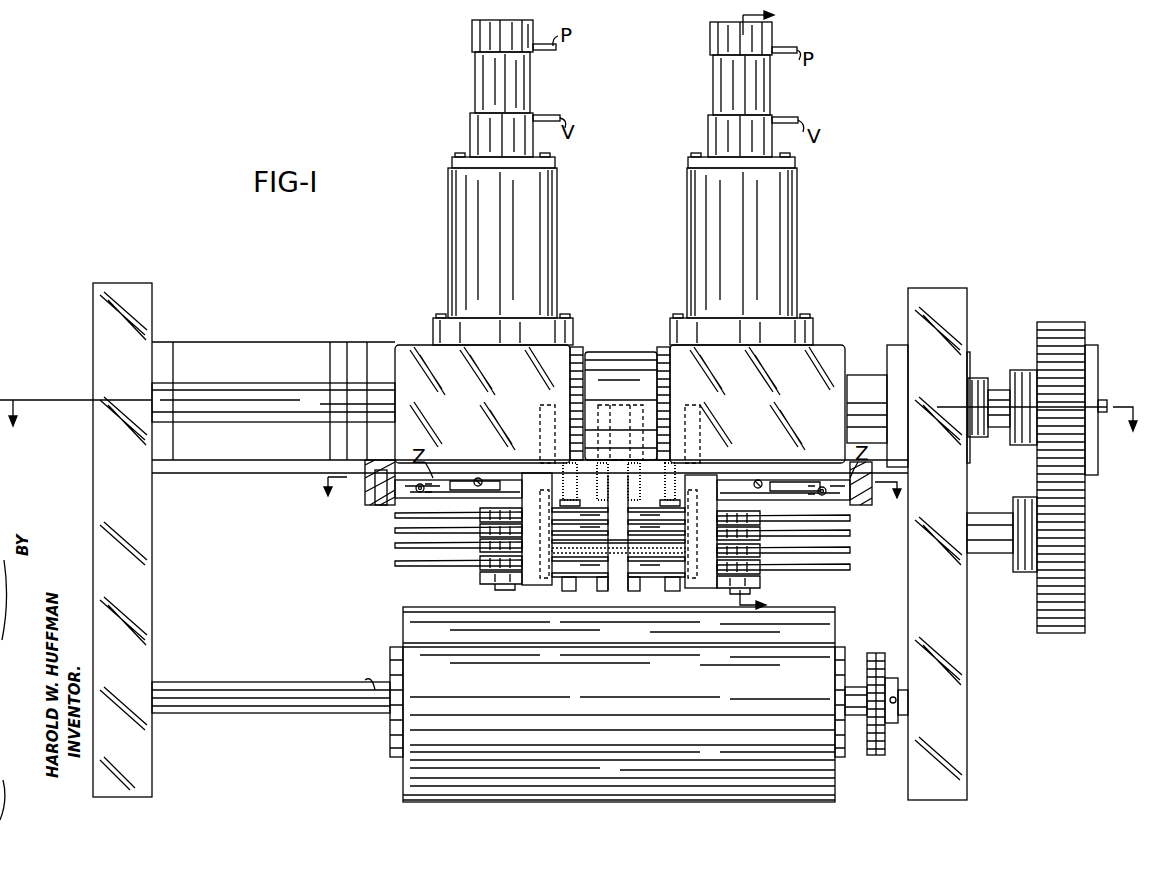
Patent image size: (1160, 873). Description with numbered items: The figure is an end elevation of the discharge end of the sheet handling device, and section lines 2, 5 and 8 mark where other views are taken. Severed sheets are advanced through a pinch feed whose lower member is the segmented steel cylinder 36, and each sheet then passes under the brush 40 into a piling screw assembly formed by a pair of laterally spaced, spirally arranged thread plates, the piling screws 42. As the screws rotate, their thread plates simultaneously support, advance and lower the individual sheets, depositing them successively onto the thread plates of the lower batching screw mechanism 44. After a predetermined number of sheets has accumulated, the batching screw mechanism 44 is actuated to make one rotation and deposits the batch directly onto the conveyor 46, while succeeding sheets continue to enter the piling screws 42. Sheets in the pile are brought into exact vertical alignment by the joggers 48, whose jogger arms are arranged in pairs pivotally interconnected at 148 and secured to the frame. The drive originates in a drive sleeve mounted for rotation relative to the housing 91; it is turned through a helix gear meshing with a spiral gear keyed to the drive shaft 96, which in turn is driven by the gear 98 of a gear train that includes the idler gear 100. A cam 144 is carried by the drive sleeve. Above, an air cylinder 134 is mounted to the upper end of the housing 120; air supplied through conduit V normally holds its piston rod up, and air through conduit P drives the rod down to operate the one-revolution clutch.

The section line 2- 2 is at (570, 427).
The section line 5- 5 is at (613, 499).
The section line 8- 8 is at (765, 311).
The segmented steel cylinder 36 is at (600, 584).
The brush 40 is at (547, 455).
The piling screws 42 is at (392, 520).
The batching screw mechanism 44 is at (408, 574).
The conveyor 46 is at (832, 632).
The joggers 48 is at (527, 585).
The housing 91 is at (436, 330).
The drive shaft 96 is at (290, 415).
The gear 98 is at (1073, 330).
The idler gear 100 is at (1082, 624).
The housing 120 is at (556, 240).
The air cylinder 134 is at (531, 77).
The cam 144 is at (481, 478).
The pivotal interconnection 148 is at (368, 505).